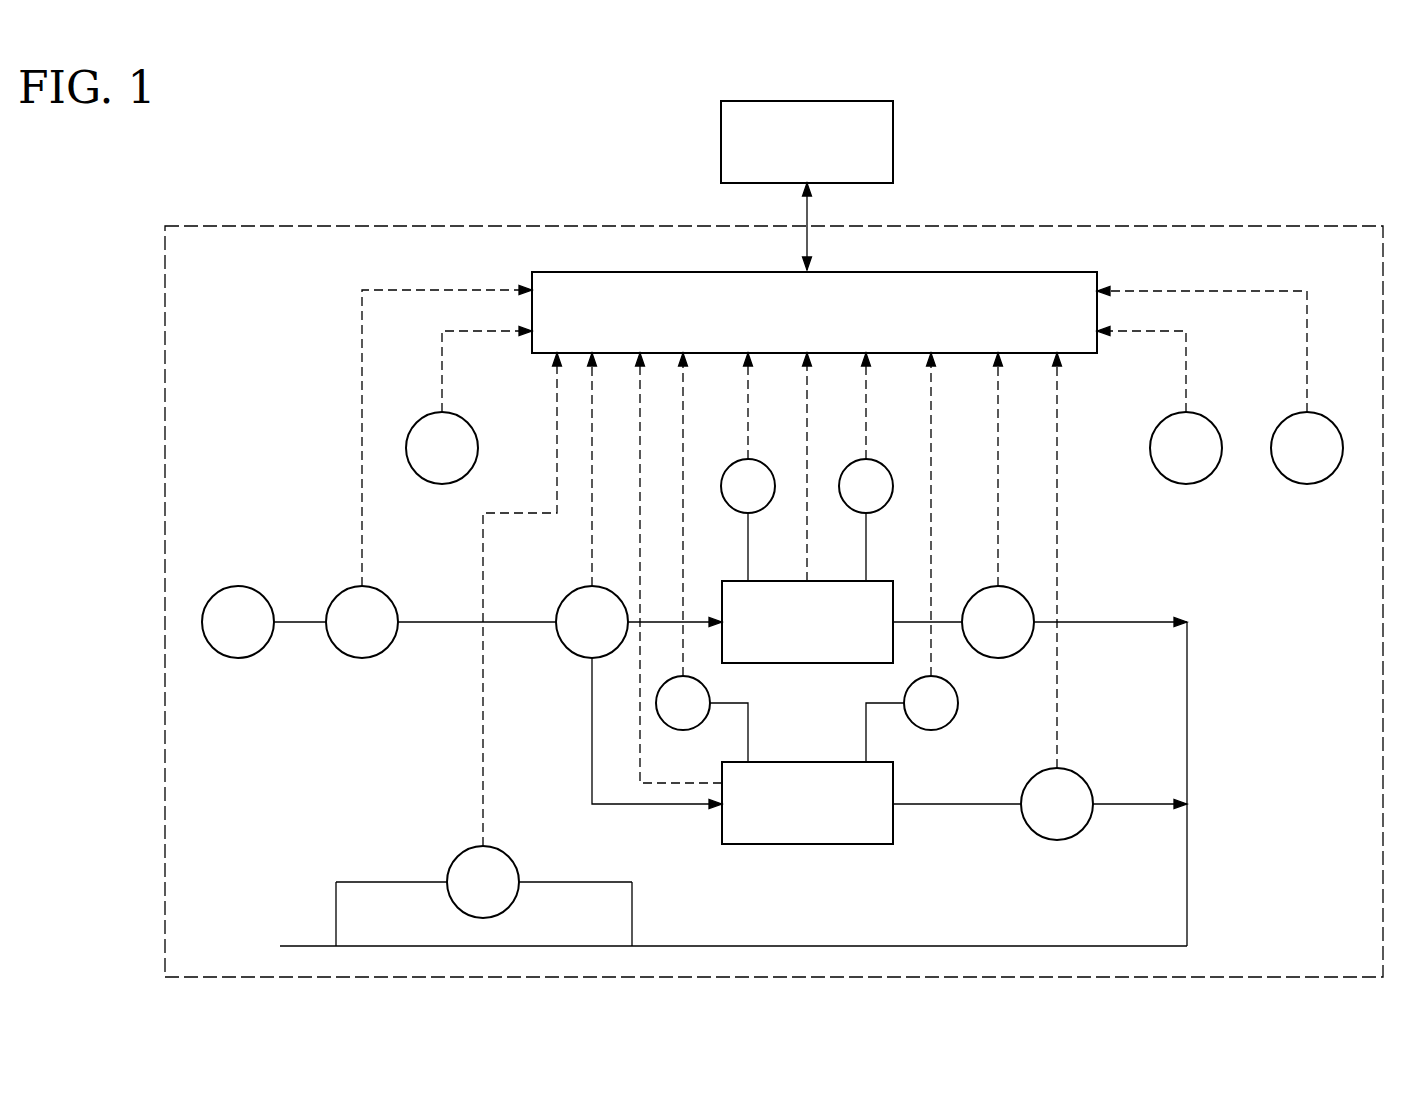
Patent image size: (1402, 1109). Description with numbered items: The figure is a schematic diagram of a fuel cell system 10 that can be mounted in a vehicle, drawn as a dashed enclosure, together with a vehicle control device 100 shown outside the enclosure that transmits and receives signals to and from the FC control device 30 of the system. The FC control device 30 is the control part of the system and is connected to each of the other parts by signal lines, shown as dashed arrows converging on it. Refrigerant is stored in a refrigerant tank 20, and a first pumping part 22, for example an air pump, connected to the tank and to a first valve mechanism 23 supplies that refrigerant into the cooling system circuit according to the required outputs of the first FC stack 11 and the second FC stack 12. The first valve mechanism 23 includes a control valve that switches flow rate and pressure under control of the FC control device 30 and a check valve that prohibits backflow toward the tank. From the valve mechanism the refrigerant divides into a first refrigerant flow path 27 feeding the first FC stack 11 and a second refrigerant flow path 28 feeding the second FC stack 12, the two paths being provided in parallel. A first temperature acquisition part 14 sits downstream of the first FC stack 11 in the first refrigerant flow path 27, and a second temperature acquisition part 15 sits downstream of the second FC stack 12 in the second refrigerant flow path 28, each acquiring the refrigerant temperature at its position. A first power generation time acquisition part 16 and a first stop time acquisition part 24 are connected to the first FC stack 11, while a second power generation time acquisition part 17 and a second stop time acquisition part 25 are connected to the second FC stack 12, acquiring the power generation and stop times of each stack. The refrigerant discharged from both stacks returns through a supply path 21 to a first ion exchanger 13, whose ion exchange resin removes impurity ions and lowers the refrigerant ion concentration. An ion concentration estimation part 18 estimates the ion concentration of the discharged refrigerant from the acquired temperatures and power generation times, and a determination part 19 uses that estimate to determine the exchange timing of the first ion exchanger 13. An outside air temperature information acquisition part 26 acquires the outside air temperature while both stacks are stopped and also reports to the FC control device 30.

The fuel cell system 10 is at (252, 194).
The control device 100 is at (721, 140).
The FC control device 30 is at (1090, 272).
The first fuel cell stack 11 is at (807, 663).
The second fuel cell stack 12 is at (807, 844).
The first ion exchanger 13 is at (505, 855).
The first temperature acquisition part 14 is at (1025, 598).
The second temperature acquisition part 15 is at (1078, 780).
The first power generation time acquisition part 16 is at (870, 460).
The second power generation time acquisition part 17 is at (958, 703).
The ion concentration estimation part 18 is at (1186, 485).
The determination part 19 is at (1307, 485).
The refrigerant tank 20 is at (240, 586).
The supply path 21 is at (1187, 712).
The first pumping part 22 is at (380, 590).
The first valve mechanism 23 is at (575, 655).
The first stop time acquisition part 24 is at (740, 460).
The second stop time acquisition part 25 is at (683, 730).
The outside air temperature information acquisition part 26 is at (478, 448).
The first refrigerant flow path 27 is at (945, 620).
The second refrigerant flow path 28 is at (957, 806).